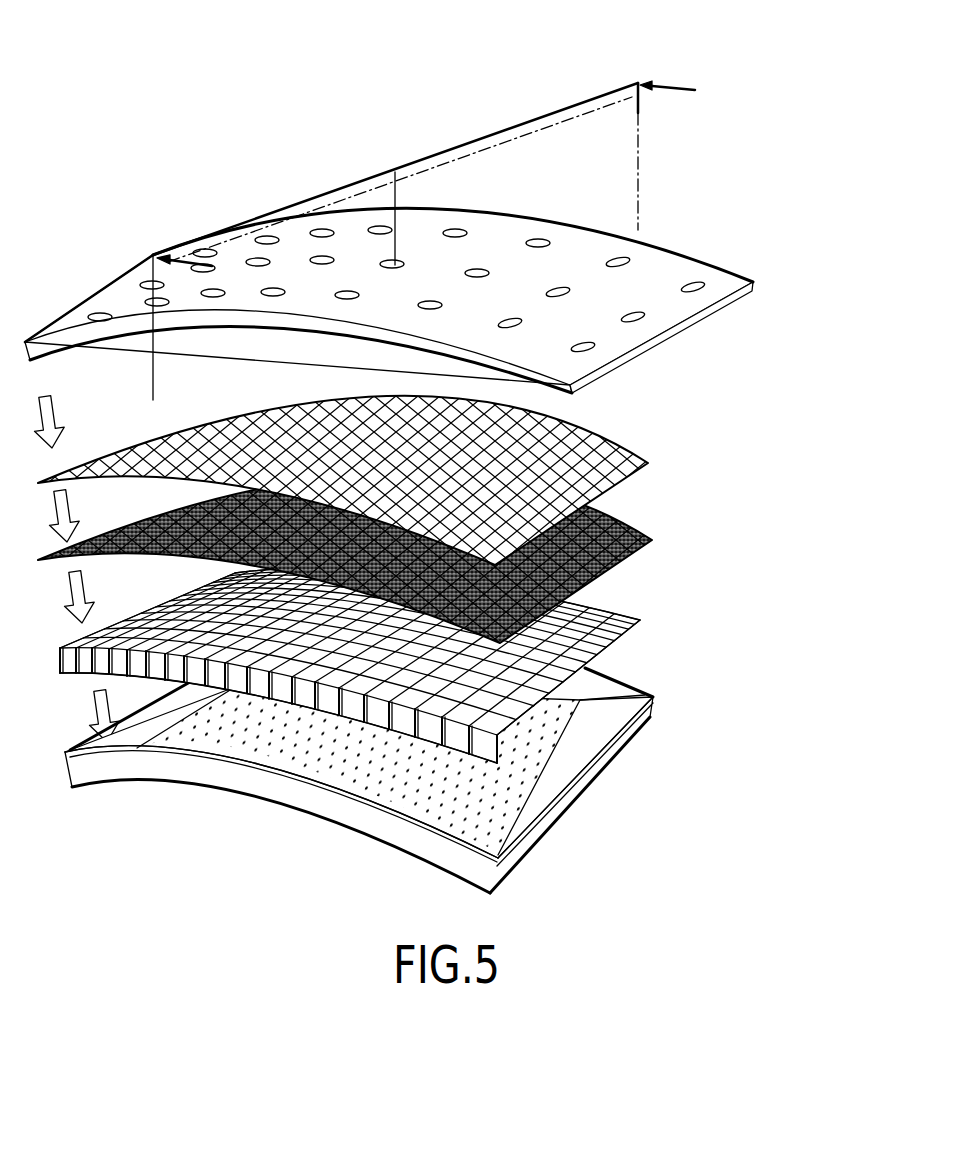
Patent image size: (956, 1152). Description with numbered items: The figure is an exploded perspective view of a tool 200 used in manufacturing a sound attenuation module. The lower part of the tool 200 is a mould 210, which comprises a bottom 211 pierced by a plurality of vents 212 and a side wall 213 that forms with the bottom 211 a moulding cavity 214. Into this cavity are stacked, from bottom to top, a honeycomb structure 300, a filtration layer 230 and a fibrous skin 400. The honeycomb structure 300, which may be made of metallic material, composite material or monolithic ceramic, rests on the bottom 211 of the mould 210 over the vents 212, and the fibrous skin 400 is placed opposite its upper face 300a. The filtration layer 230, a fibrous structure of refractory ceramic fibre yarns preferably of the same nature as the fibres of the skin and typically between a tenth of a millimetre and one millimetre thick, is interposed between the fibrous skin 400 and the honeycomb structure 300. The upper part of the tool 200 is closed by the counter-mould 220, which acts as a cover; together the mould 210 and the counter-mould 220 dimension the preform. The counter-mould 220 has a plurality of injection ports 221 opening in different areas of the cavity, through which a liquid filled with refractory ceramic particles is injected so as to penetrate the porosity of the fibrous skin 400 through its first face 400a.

The tool 200 is at (84, 84).
The counter-mould 220 is at (399, 240).
The injection ports 221 is at (618, 260).
The fibrous skin 400 is at (375, 480).
The first face 400a is at (592, 443).
The filtration layer 230 is at (634, 528).
The honeycomb structure 300 is at (386, 648).
The upper face 300a is at (612, 606).
The mould 210 is at (369, 771).
The bottom 211 is at (612, 720).
The vents 212 is at (518, 808).
The side wall 213 is at (95, 746).
The moulding cavity 214 is at (358, 767).